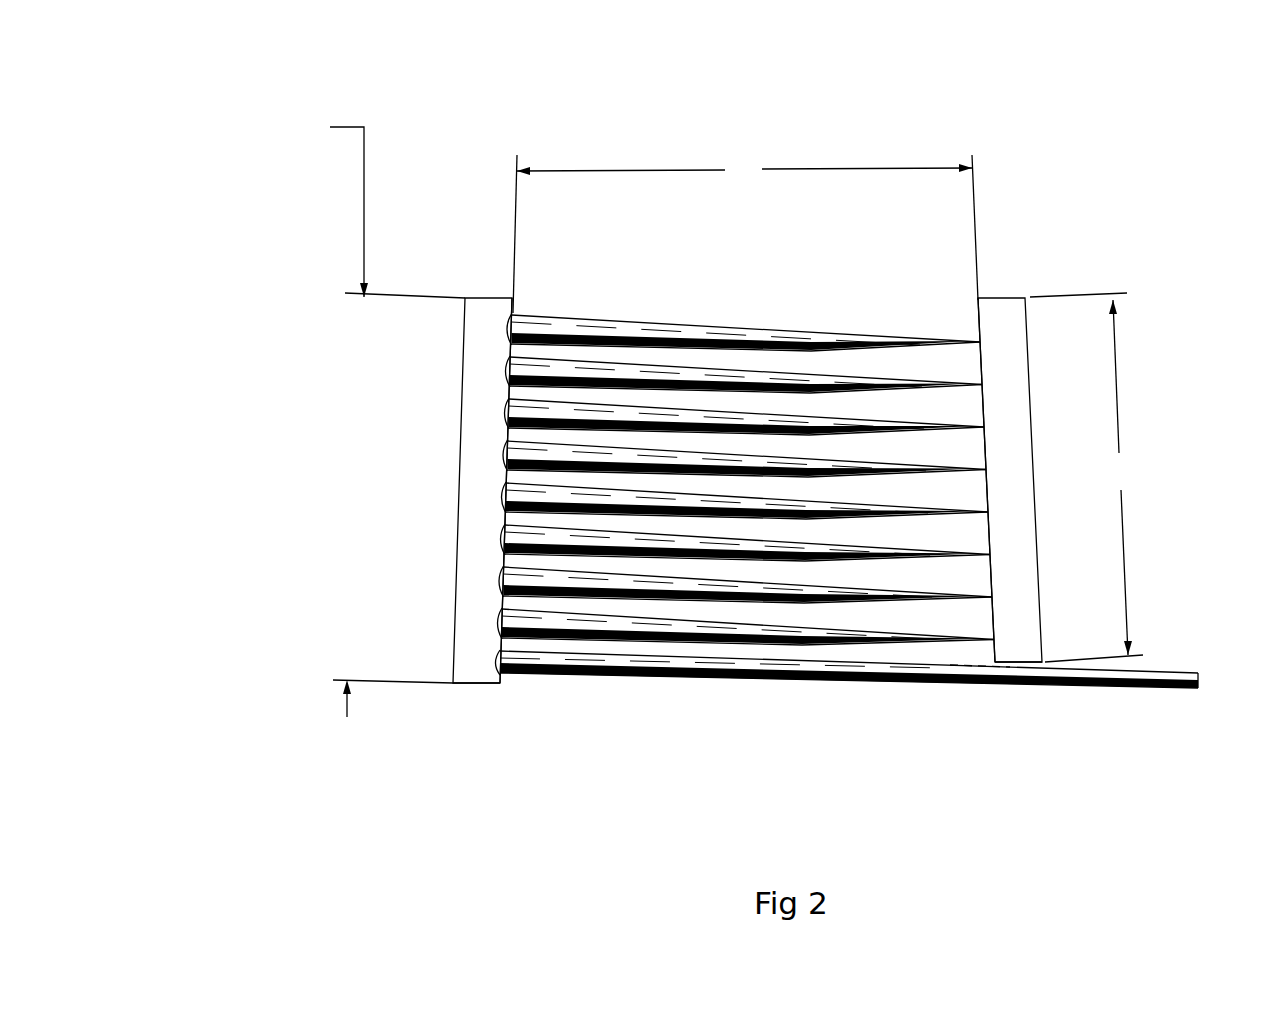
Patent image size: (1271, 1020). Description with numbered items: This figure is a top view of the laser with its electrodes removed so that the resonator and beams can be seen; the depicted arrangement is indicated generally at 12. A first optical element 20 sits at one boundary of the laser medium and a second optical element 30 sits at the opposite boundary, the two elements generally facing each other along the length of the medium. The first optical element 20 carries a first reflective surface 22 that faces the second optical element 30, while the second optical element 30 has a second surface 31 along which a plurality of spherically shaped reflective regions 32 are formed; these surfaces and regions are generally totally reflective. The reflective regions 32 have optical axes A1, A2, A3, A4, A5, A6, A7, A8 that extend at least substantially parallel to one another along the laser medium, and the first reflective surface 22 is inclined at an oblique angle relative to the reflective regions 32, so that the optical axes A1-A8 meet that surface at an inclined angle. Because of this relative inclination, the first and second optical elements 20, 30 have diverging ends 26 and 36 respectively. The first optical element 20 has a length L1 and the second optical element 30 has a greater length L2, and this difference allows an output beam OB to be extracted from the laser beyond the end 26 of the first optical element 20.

The optical fiber coupling device 12 is at (912, 147).
The first optical element 20 is at (998, 310).
The first reflective surface 22 is at (973, 315).
The diverging end of the first optical element 26 is at (1025, 662).
The second optical element 30 is at (467, 672).
The second surface 31 is at (513, 313).
The reflective regions 32 is at (510, 316).
The diverging end of the second optical element 36 is at (478, 687).
The optical axis A1 is at (878, 338).
The optical axis A2 is at (835, 380).
The optical axis A3 is at (797, 422).
The optical axis A4 is at (753, 462).
The optical axis A5 is at (713, 502).
The optical axis A6 is at (672, 540).
The optical axis A7 is at (633, 577).
The optical axis A8 is at (597, 618).
The output beam OB is at (1163, 677).
The length of the first optical element L1 is at (1086, 477).
The length of the second optical element L2 is at (376, 414).